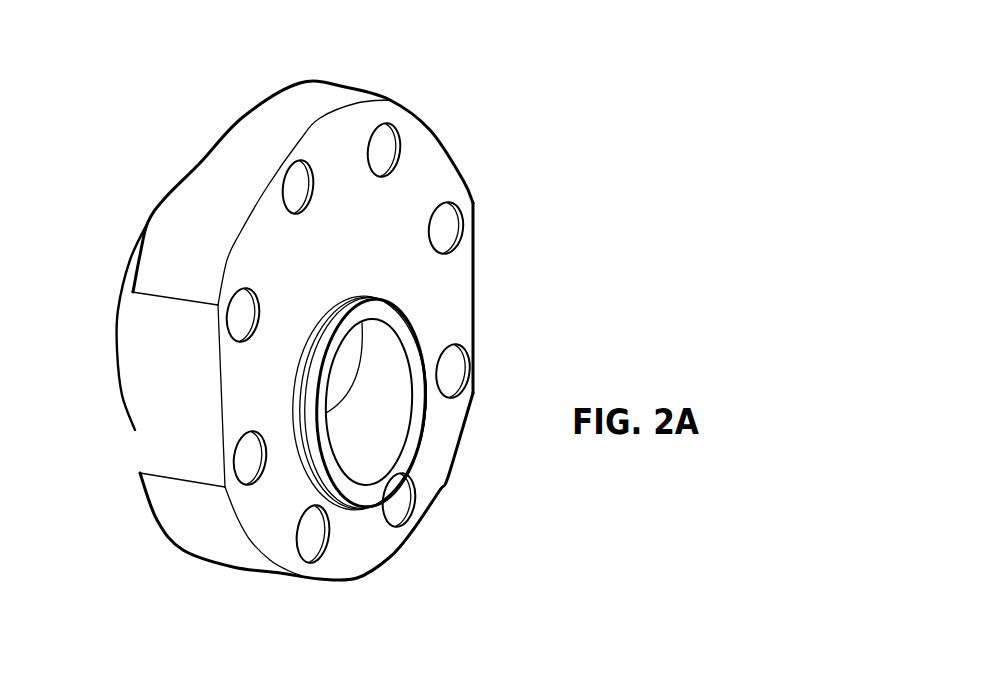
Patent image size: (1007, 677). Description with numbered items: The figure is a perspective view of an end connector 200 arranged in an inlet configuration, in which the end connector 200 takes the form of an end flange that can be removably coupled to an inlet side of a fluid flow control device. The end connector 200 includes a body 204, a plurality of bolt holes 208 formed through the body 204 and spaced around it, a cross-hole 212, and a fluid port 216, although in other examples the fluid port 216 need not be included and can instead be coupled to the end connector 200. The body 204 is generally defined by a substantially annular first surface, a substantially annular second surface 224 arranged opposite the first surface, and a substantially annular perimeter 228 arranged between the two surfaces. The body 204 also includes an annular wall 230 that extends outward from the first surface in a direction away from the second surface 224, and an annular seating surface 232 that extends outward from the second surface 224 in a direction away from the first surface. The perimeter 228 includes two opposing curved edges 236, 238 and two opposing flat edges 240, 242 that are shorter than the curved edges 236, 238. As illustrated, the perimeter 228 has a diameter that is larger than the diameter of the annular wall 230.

The end connector 200 is at (490, 110).
The body 204 is at (418, 548).
The bolt holes 208 is at (380, 123).
The cross-hole 212 is at (375, 432).
The fluid port 216 is at (122, 425).
The second surface 224 is at (273, 527).
The perimeter 228 is at (205, 175).
The annular wall 230 is at (127, 320).
The annular seating surface 232 is at (413, 337).
The curved edge 236 is at (350, 580).
The curved edge 238 is at (253, 117).
The flat edge 240 is at (176, 417).
The flat edge 242 is at (476, 263).